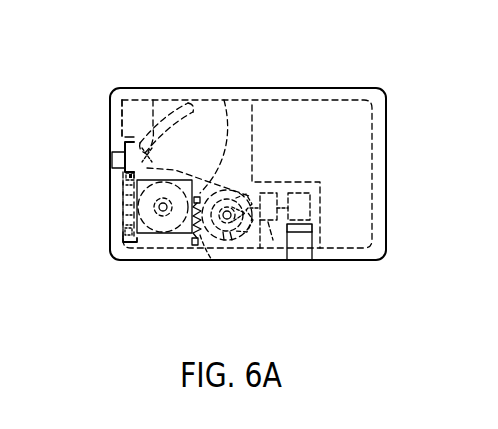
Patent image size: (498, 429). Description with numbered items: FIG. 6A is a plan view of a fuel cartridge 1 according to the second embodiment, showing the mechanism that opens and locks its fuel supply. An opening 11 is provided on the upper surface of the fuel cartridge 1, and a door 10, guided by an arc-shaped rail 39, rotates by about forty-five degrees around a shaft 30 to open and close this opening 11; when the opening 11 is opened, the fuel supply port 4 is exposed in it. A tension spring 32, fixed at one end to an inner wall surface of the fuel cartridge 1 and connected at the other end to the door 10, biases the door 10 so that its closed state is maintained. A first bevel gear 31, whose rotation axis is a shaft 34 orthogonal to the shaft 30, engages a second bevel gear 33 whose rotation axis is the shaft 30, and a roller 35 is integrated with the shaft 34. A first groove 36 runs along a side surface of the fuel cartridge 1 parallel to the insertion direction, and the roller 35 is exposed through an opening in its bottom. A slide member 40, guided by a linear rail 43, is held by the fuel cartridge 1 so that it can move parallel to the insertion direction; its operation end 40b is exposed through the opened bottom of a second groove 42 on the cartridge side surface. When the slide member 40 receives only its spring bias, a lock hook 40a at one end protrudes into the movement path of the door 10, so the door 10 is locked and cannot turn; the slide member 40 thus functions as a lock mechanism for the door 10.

The fuel cartridge 1 is at (105, 97).
The door 10 is at (224, 96).
The linear rail 43 is at (127, 93).
The lock hook 40a is at (157, 95).
The arc-shaped rail 39 is at (187, 96).
The slide member 40 is at (113, 149).
The operation end 40b is at (110, 160).
The second groove 42 is at (112, 173).
The fuel supply port 4 is at (127, 205).
The opening 11 is at (130, 224).
The tension spring 32 is at (195, 247).
The shaft 30 is at (240, 238).
The second bevel gear 33 is at (239, 252).
The first bevel gear 31 is at (244, 252).
The shaft 34 is at (274, 250).
The roller 35 is at (294, 240).
The first groove 36 is at (306, 240).